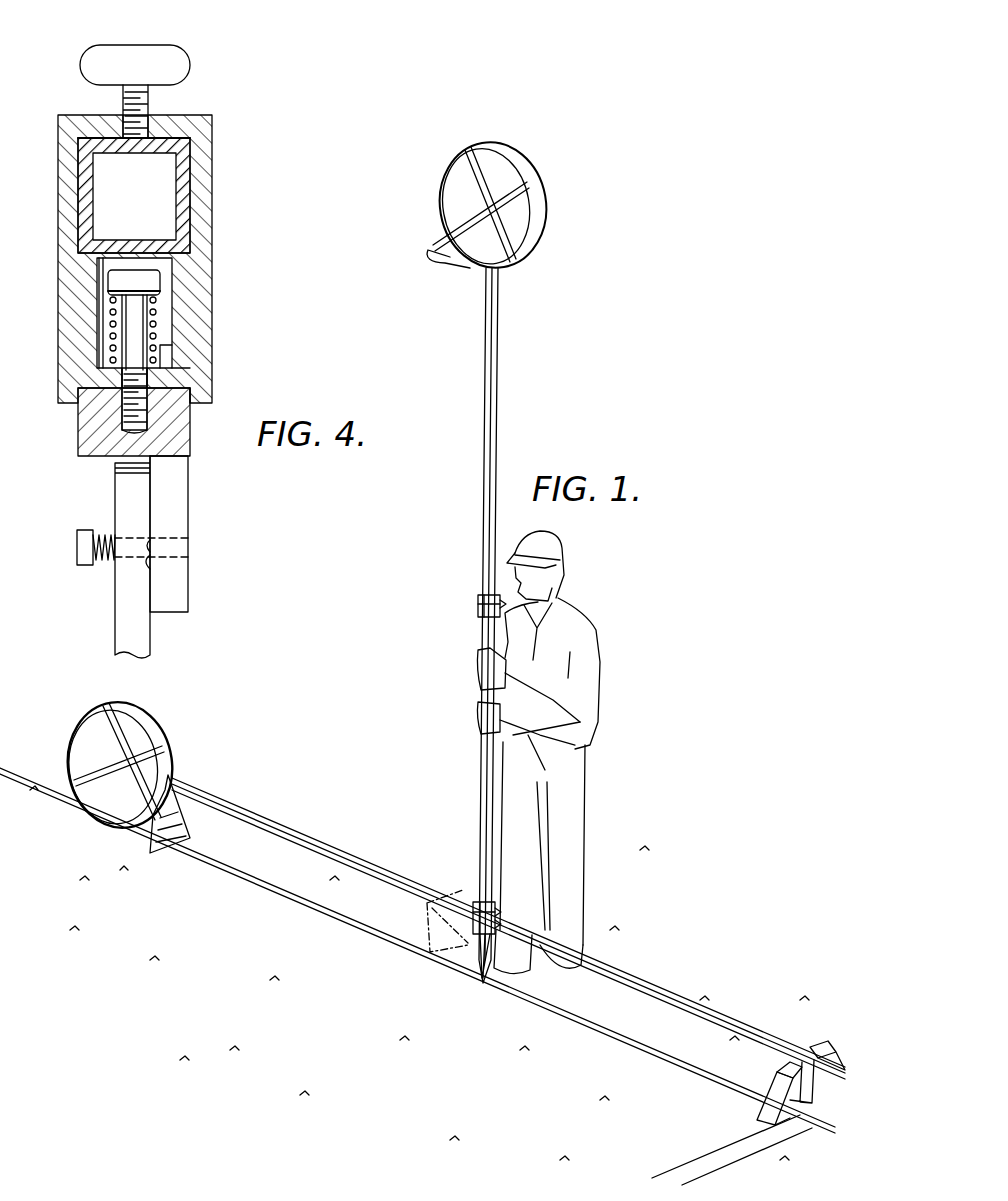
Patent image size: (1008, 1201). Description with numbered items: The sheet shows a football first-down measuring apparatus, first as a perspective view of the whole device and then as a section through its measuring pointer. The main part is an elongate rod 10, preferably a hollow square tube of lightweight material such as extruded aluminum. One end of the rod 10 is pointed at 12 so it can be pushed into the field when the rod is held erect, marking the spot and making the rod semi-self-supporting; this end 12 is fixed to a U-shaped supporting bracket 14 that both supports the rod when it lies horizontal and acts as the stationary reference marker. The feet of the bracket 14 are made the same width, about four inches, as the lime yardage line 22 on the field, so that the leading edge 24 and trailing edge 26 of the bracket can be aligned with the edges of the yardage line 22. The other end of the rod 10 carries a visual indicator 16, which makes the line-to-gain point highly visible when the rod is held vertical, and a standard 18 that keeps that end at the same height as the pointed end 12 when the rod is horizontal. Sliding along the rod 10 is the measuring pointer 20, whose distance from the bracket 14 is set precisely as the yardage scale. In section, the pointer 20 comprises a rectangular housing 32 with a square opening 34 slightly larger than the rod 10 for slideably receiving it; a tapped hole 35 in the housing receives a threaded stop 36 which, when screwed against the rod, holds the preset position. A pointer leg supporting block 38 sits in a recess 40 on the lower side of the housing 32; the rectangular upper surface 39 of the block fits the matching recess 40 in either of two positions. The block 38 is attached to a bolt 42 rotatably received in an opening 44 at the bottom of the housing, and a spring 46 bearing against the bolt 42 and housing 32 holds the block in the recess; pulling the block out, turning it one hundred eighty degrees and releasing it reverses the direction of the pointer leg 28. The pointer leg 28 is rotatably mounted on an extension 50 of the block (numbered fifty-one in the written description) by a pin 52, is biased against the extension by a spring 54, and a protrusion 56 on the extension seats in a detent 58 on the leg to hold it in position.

In FIG. 4, the elongate rod 10 is at (192, 176).
In FIG. 1, the elongate rod 10 is at (486, 530).
In FIG. 1, the pointed end 12 is at (481, 982).
In FIG. 1, the U-shaped supporting bracket 14 is at (470, 893).
In FIG. 1, the visual indicator 16 is at (548, 206).
In FIG. 1, the standard 18 is at (446, 275).
In FIG. 4, the sliding measuring pointer 20 is at (245, 214).
In FIG. 1, the sliding measuring pointer 20 is at (478, 606).
In FIG. 1, the yardage line 22 is at (706, 1160).
In FIG. 1, the leading edge 24 is at (762, 1104).
In FIG. 1, the trailing edge 26 is at (814, 1102).
In FIG. 4, the pointer leg 28 is at (125, 612).
In FIG. 4, the rectangular housing 32 is at (198, 115).
In FIG. 4, the square opening 34 is at (88, 143).
In FIG. 4, the tapped hole 35 is at (126, 118).
In FIG. 4, the threaded stop 36 is at (178, 55).
In FIG. 4, the pointer leg supporting block 38 is at (190, 430).
In FIG. 4, the upper surface 39 is at (176, 386).
In FIG. 4, the recess 40 is at (190, 402).
In FIG. 4, the bolt 42 is at (147, 328).
In FIG. 4, the opening 44 is at (122, 376).
In FIG. 4, the spring 46 is at (152, 302).
In FIG. 4, the plate 50 is at (174, 530).
In FIG. 4, the pin 52 is at (80, 546).
In FIG. 4, the spring 54 is at (100, 535).
In FIG. 4, the protrusion 56 is at (150, 547).
In FIG. 4, the detent 58 is at (150, 566).